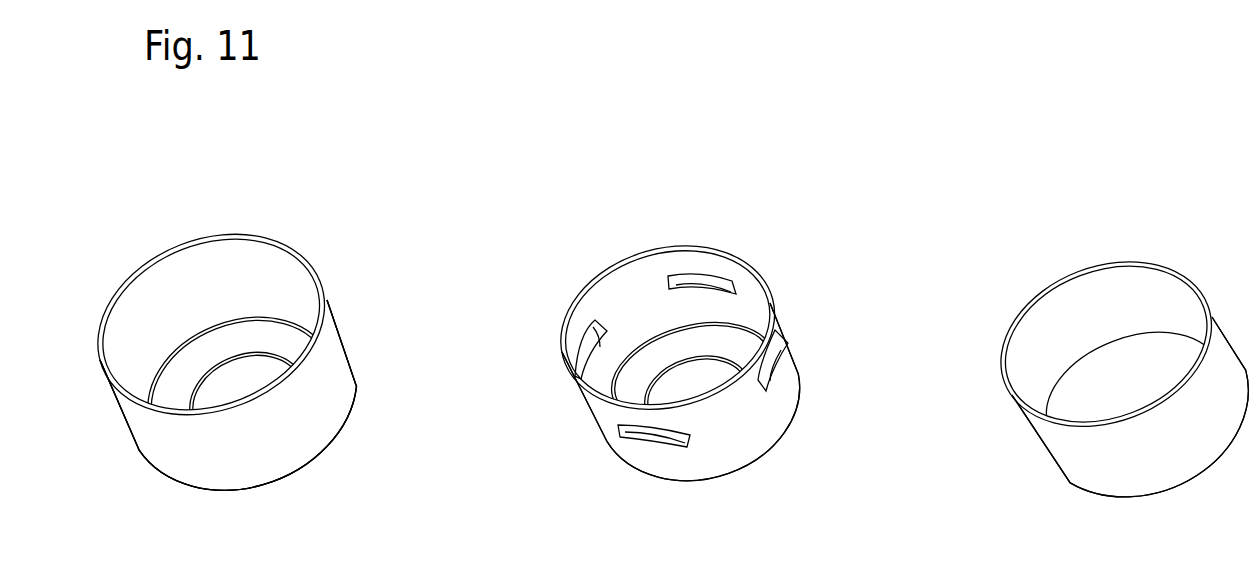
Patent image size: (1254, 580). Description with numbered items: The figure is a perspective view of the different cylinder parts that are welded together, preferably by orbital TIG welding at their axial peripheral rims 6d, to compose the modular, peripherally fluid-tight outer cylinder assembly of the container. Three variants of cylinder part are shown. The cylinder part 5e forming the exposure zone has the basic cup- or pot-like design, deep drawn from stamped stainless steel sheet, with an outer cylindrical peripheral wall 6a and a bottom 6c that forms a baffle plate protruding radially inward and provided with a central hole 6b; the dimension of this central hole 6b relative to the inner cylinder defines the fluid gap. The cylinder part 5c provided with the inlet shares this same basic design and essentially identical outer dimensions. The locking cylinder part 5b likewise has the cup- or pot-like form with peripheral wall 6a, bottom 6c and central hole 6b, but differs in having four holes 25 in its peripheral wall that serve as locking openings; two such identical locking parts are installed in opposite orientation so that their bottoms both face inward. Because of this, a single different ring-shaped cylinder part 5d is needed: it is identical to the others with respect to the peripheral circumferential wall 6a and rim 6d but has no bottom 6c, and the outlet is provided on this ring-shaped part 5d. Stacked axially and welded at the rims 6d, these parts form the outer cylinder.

The locking cylinder part 5b is at (708, 450).
The cylinder part provided with the inlet 5c is at (228, 430).
The ring-shaped cylinder part 5d is at (1163, 445).
The cylinder part forming the exposure zone 5e is at (288, 443).
The outer cylindrical peripheral wall 6a is at (167, 453).
The central hole 6b is at (252, 370).
The bottom plate 6c is at (200, 363).
The axial peripheral rim 6d is at (263, 242).
The hole serving as locking opening 25 is at (773, 362).